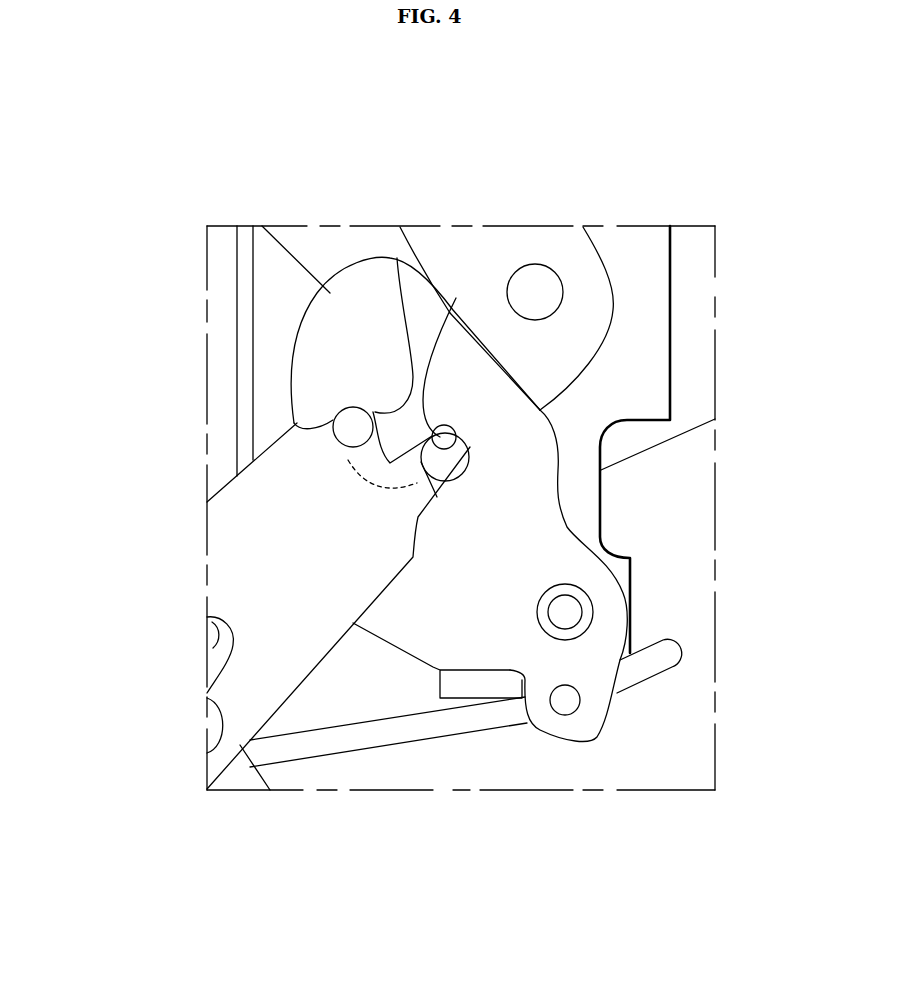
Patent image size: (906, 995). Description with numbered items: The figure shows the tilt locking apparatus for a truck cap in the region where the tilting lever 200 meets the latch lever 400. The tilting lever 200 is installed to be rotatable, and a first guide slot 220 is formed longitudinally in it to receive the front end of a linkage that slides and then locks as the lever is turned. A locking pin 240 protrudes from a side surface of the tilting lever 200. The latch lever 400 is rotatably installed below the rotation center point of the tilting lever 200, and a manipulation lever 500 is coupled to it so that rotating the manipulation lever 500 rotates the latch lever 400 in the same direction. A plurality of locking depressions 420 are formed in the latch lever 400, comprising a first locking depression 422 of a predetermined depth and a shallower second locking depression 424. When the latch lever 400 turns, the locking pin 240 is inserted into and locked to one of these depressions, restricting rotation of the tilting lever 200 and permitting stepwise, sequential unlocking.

The tilting lever 200 is at (287, 647).
The first guide slot 220 is at (217, 637).
The locking pin 240 is at (355, 428).
The latch lever 400 is at (540, 500).
The locking depressions 420 is at (415, 287).
The first locking depression 422 is at (456, 300).
The second locking depression 424 is at (388, 257).
The manipulation lever 500 is at (430, 720).